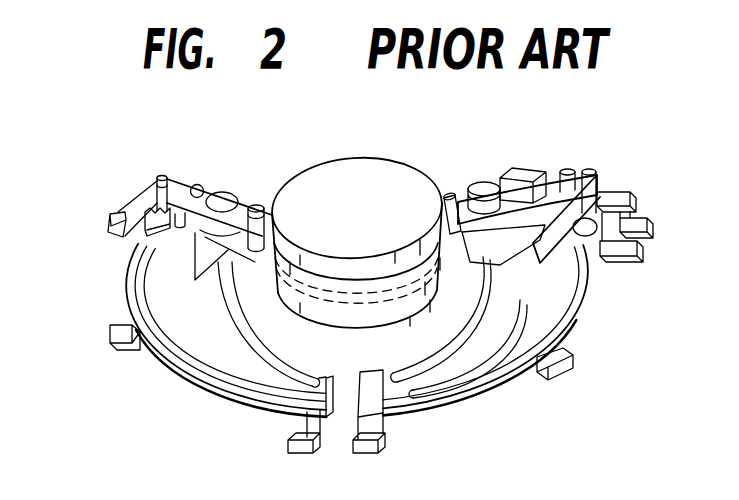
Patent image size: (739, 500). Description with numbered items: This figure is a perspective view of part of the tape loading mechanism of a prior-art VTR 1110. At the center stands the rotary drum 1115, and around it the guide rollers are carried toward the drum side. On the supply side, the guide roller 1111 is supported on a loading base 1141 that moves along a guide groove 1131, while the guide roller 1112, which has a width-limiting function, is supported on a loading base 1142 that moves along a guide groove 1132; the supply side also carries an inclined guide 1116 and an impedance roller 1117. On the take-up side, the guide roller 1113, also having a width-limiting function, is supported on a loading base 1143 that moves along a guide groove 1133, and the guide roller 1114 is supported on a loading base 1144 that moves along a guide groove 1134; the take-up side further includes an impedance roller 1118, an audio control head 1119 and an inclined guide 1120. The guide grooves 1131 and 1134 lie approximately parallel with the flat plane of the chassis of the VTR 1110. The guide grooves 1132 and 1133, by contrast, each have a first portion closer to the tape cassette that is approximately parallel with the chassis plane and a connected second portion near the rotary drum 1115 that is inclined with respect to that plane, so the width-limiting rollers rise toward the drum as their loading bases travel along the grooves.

The VTR 1110 is at (73, 118).
The guide roller 1111 is at (156, 178).
The guide roller 1112 is at (257, 206).
The guide roller 1113 is at (447, 196).
The guide roller 1114 is at (590, 170).
The rotary drum 1115 is at (373, 170).
The inclined guide 1116 is at (196, 184).
The impedance roller 1117 is at (220, 192).
The impedance roller 1118 is at (485, 182).
The audio control head 1119 is at (530, 170).
The inclined guide 1120 is at (571, 170).
The guide groove 1131 is at (188, 362).
The guide groove 1132 is at (247, 360).
The guide groove 1133 is at (447, 355).
The guide groove 1134 is at (545, 320).
The loading base 1141 is at (142, 250).
The loading base 1142 is at (195, 282).
The loading base 1143 is at (480, 282).
The loading base 1144 is at (590, 275).